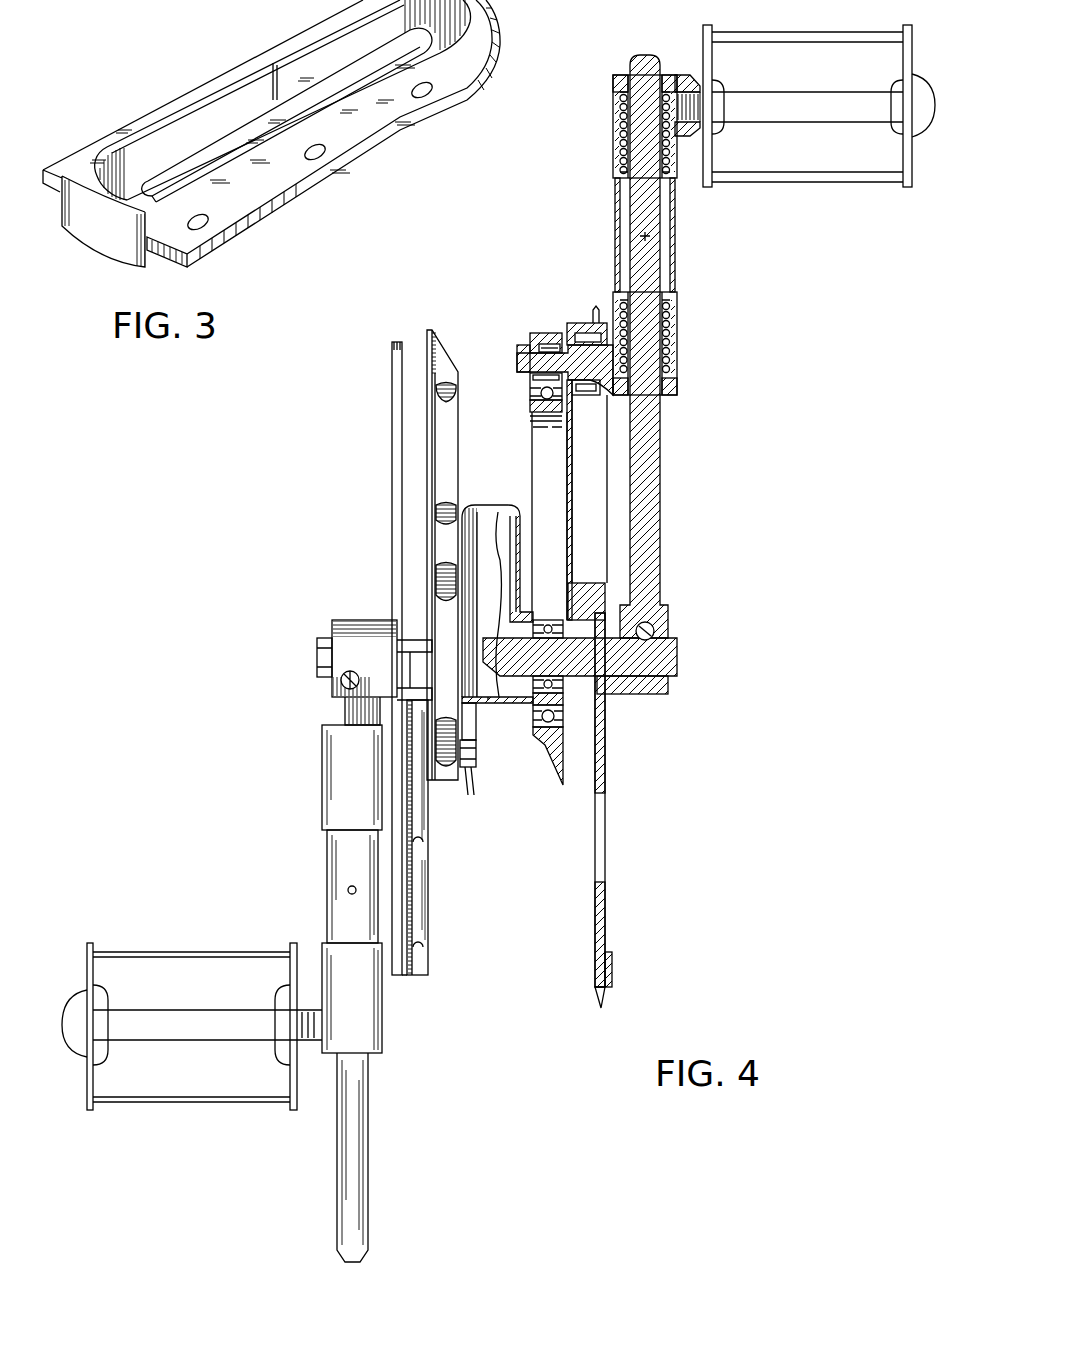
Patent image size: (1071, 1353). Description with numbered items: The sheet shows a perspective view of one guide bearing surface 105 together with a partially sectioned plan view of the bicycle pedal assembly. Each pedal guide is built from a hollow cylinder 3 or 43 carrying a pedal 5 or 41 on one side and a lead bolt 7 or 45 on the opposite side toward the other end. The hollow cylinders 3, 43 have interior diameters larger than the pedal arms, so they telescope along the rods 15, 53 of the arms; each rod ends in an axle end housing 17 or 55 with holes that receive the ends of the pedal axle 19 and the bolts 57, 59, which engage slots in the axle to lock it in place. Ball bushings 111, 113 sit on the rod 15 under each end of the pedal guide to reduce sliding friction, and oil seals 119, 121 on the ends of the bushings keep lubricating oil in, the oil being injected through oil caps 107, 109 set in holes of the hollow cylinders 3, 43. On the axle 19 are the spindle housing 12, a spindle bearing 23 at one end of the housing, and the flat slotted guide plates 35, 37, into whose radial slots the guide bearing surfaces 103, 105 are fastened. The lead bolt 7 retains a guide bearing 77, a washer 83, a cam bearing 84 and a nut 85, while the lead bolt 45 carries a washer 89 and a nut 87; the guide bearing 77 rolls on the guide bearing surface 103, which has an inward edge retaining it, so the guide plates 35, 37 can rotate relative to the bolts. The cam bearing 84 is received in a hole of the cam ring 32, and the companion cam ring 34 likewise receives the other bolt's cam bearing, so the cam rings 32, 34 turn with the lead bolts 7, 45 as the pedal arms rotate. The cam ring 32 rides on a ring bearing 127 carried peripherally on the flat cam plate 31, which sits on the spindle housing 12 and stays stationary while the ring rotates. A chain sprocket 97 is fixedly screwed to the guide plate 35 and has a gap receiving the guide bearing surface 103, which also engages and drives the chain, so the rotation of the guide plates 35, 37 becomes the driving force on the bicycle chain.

In FIG. 3, the guide bearing surface 105 is at (170, 97).
In FIG. 4, the guide bearing surface 105 is at (428, 900).
In FIG. 4, the hollow cylinder 3 is at (675, 260).
In FIG. 4, the pedal 5 is at (840, 185).
In FIG. 4, the lead bolt 7 is at (517, 366).
In FIG. 4, the spindle housing 12 is at (487, 704).
In FIG. 4, the rod 15 is at (652, 498).
In FIG. 4, the axle end housing 17 is at (668, 688).
In FIG. 4, the pedal axle 19 is at (318, 658).
In FIG. 4, the spindle bearing 23 is at (563, 681).
In FIG. 4, the cam plate 31 is at (530, 413).
In FIG. 4, the cam ring 32 is at (561, 786).
In FIG. 4, the cam ring 34 is at (432, 345).
In FIG. 4, the guide plate 35 is at (607, 852).
In FIG. 4, the guide plate 37 is at (392, 487).
In FIG. 4, the pedal 41 is at (178, 950).
In FIG. 4, the hollow cylinder 43 is at (325, 845).
In FIG. 4, the lead bolt 45 is at (472, 768).
In FIG. 4, the rod 53 is at (368, 1130).
In FIG. 4, the axle end housing 55 is at (352, 620).
In FIG. 4, the bolt 57 is at (660, 628).
In FIG. 4, the bolt 59 is at (340, 680).
In FIG. 4, the guide bearing 77 is at (585, 325).
In FIG. 4, the washer 83 is at (528, 346).
In FIG. 4, the cam bearing 84 is at (545, 333).
In FIG. 4, the nut 85 is at (518, 350).
In FIG. 4, the nut 87 is at (468, 770).
In FIG. 4, the washer 89 is at (463, 765).
In FIG. 4, the chain sprocket 97 is at (612, 968).
In FIG. 4, the guide bearing surface 103 is at (598, 462).
In FIG. 4, the oil cap 107 is at (645, 238).
In FIG. 4, the oil cap 109 is at (348, 888).
In FIG. 4, the ball bushing 111 is at (672, 330).
In FIG. 4, the ball bushing 113 is at (613, 133).
In FIG. 4, the oil seal 119 is at (672, 388).
In FIG. 4, the oil seal 121 is at (613, 85).
In FIG. 4, the ring bearing 127 is at (535, 400).